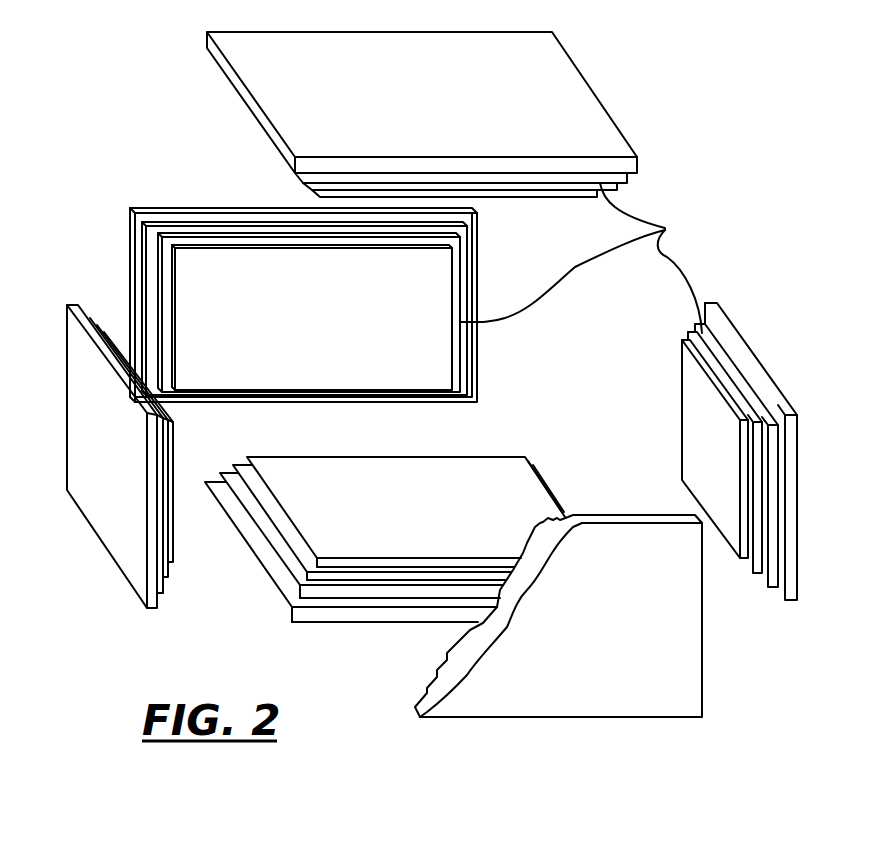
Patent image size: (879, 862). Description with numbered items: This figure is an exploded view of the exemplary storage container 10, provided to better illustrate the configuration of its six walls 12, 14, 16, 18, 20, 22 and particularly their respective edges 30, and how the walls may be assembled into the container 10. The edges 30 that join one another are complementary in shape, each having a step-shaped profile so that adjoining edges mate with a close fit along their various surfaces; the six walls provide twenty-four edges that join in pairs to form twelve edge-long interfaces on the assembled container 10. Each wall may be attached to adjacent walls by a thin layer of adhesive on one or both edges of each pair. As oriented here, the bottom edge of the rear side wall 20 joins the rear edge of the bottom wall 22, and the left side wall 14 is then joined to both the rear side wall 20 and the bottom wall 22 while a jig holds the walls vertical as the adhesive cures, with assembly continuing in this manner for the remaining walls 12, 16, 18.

The storage container 10 is at (694, 180).
The wall 12 is at (542, 70).
The left side wall 14 is at (93, 400).
The wall 16 is at (675, 648).
The wall 18 is at (738, 338).
The rear side wall 20 is at (477, 255).
The bottom wall 22 is at (502, 473).
The edges 30 is at (581, 258).